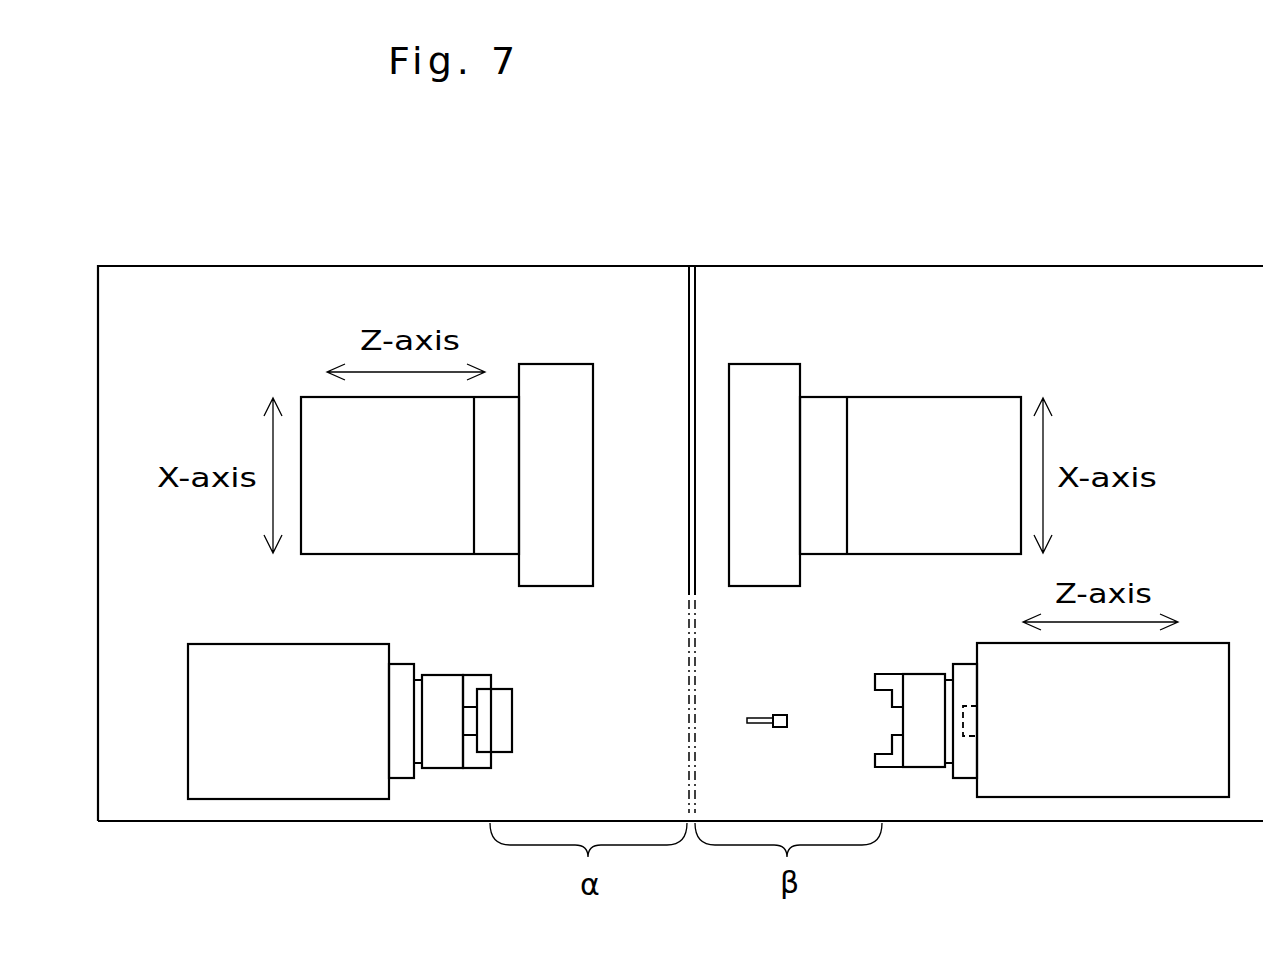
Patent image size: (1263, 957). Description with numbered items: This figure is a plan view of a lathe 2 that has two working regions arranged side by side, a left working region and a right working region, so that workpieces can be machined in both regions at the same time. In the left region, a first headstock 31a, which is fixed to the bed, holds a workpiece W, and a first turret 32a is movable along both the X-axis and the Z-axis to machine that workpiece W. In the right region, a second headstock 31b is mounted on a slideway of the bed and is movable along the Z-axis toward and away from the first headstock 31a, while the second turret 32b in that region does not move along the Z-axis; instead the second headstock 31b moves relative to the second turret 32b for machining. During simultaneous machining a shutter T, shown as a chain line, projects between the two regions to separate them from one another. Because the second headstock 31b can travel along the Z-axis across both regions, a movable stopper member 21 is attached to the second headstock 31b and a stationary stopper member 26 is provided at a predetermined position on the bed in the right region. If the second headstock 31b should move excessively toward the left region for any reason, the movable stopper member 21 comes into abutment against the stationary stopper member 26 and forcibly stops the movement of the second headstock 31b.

The lathe 2 is at (783, 212).
The shutter T is at (693, 318).
The first turret 32a is at (358, 543).
The second turret 32b is at (933, 408).
The first headstock 31a is at (287, 777).
The second headstock 31b is at (1098, 783).
The workpiece W is at (505, 702).
The stationary stopper member 26 is at (774, 718).
The movable stopper member 21 is at (967, 738).